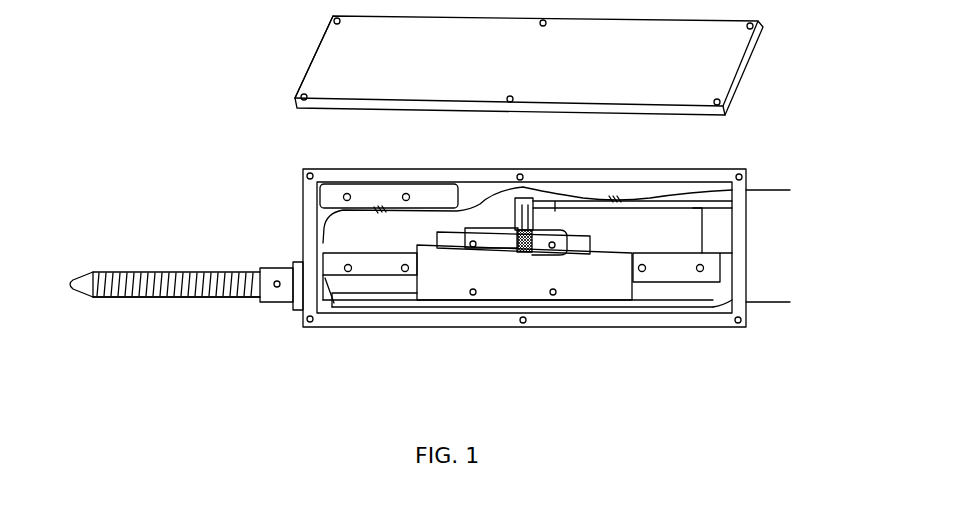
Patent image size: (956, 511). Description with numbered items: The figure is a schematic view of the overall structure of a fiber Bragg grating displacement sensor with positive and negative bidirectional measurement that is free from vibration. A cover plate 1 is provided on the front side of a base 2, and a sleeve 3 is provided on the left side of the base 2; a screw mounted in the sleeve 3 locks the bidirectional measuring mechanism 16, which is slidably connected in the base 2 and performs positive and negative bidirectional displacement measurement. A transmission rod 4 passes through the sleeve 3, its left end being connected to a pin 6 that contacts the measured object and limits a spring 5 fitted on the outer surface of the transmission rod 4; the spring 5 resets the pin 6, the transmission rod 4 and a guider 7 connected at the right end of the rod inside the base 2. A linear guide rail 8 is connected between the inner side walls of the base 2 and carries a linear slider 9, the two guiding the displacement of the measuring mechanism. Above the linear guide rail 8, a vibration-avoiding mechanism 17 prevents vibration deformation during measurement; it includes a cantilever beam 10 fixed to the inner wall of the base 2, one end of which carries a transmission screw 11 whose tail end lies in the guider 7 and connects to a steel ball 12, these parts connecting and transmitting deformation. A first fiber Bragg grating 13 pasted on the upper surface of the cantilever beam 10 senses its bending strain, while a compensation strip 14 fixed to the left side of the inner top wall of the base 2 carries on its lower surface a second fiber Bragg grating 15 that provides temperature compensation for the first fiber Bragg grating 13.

The cover plate 1 is at (330, 78).
The base 2 is at (312, 208).
The sleeve 3 is at (282, 270).
The transmission rod 4 is at (342, 282).
The spring 5 is at (197, 275).
The pin 6 is at (87, 278).
The guider 7 is at (440, 284).
The linear guide rail 8 is at (665, 270).
The linear slider 9 is at (497, 303).
The cantilever beam 10 is at (718, 223).
The transmission screw 11 is at (530, 237).
The steel ball 12 is at (527, 265).
The first fiber Bragg grating (FBG1) 13 is at (616, 198).
The compensation strip 14 is at (367, 195).
The second fiber Bragg grating (FBG2) 15 is at (380, 212).
The bidirectional measuring mechanism 16 is at (197, 300).
The vibration-avoiding mechanism 17 is at (713, 218).